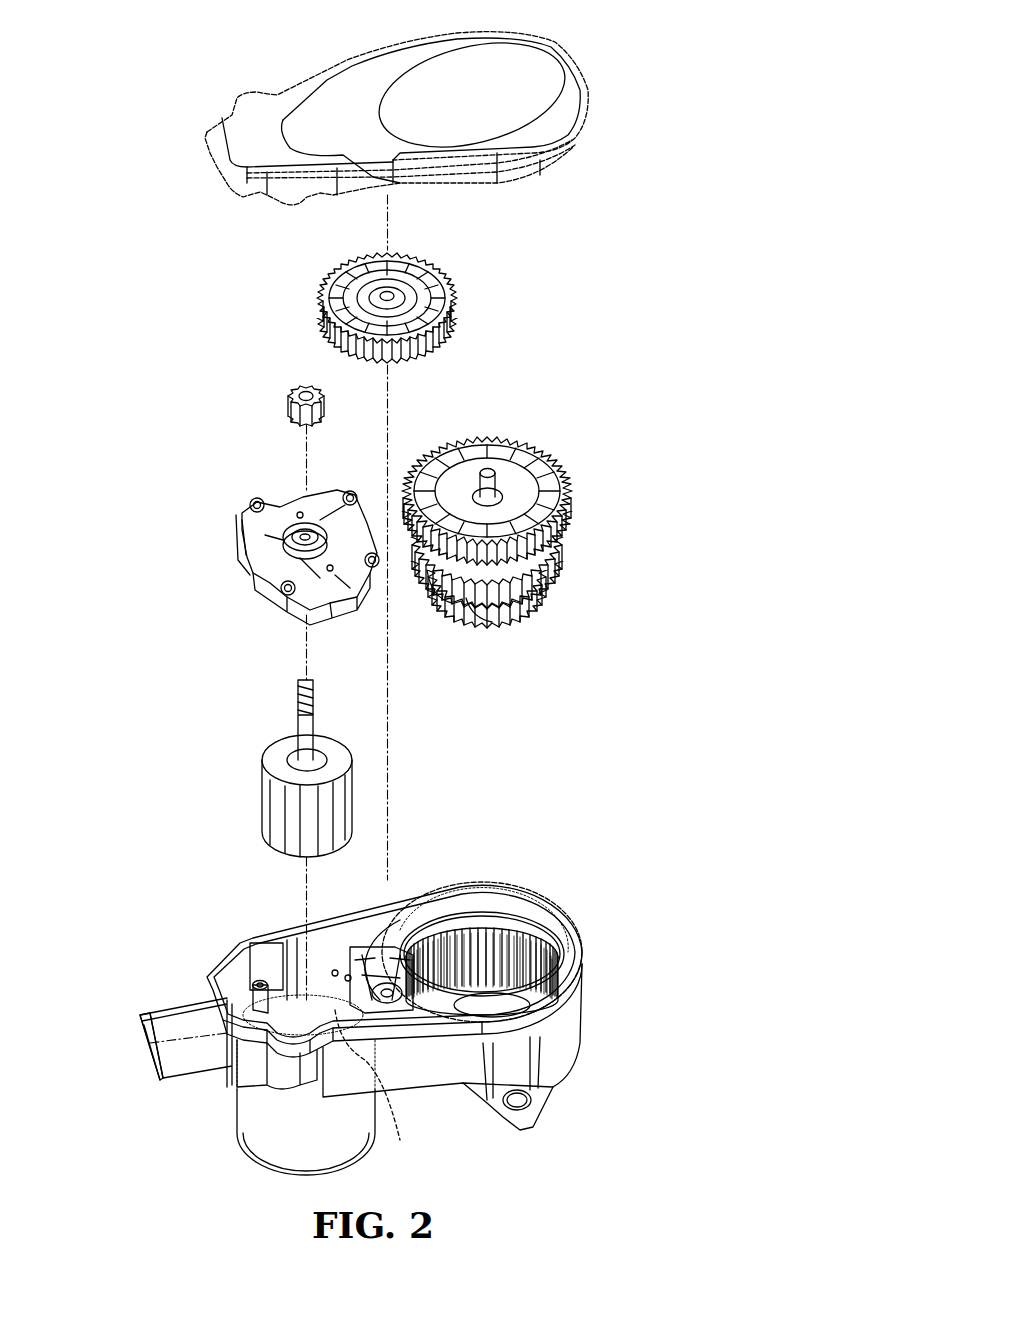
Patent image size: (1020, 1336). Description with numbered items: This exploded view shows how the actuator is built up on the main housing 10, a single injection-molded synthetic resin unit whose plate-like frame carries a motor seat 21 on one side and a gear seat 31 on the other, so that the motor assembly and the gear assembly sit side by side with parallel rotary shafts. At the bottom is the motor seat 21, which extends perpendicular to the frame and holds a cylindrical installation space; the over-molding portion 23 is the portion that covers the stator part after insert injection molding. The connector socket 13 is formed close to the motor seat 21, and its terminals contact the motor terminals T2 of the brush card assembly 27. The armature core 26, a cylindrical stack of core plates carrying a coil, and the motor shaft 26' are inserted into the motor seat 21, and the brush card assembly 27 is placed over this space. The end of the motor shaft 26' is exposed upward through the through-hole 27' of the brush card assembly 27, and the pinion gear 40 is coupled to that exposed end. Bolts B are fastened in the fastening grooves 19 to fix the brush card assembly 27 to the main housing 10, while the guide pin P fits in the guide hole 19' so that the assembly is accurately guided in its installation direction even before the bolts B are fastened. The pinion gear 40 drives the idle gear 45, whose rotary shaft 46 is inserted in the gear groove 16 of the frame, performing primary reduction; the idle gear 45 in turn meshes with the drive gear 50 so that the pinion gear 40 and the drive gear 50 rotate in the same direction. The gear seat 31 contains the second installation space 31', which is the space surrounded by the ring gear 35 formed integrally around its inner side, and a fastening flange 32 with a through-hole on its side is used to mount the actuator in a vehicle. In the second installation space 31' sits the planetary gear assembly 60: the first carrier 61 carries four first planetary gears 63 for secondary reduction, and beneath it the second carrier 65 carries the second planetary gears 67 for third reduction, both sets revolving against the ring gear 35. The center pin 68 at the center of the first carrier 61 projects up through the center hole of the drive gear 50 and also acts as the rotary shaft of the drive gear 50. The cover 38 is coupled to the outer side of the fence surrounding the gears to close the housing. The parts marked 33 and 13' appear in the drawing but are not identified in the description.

The cover 38 is at (548, 105).
The rotary shaft of the idle gear 46 is at (454, 297).
The idle gear 45 is at (454, 320).
The pinion gear 40 is at (287, 400).
The planetary gear assembly 60 is at (545, 442).
The center pin 68 is at (500, 474).
The drive gear 50 is at (570, 505).
The first planetary gears 63 is at (555, 558).
The second carrier 65 is at (542, 592).
The first carrier 61 is at (429, 600).
The second planetary gears 67 is at (472, 604).
The brush card assembly 27 is at (231, 557).
The through-hole 27' is at (282, 497).
The bolts B is at (250, 503).
The motor terminals T2 is at (240, 545).
The guide pin P is at (366, 600).
The armature core 26 is at (237, 796).
The motor shaft 26' is at (252, 720).
The main housing 10 is at (542, 880).
The gear groove 16 is at (420, 906).
The gear receiving portion 33 is at (492, 918).
The fastening grooves 19 is at (305, 1023).
The over-molding portion 23 is at (285, 1000).
The guide hole 19' is at (367, 938).
The connector socket 13 is at (184, 1010).
The pipe opening 13' is at (104, 1046).
The ring gear 35 is at (588, 922).
The second installation space 31' is at (554, 972).
The gear seat 31 is at (468, 1030).
The fastening flange 32 is at (555, 1090).
The motor seat 21 is at (262, 1120).